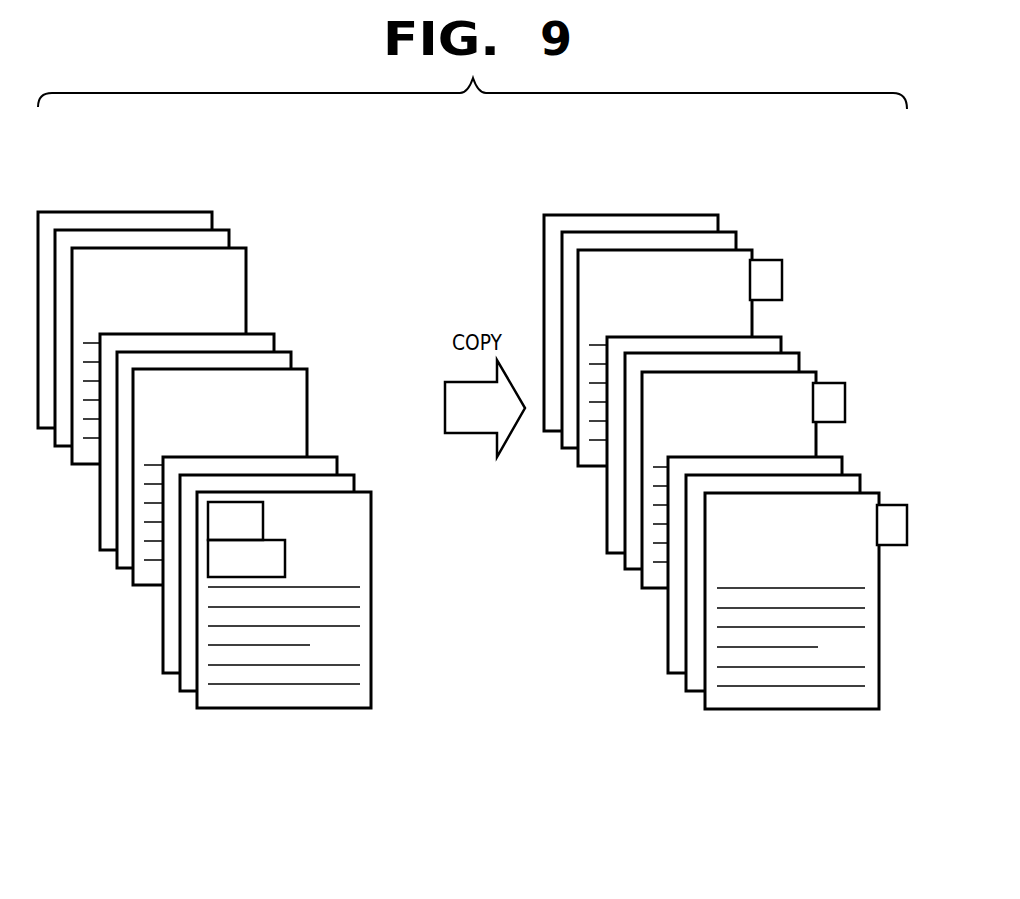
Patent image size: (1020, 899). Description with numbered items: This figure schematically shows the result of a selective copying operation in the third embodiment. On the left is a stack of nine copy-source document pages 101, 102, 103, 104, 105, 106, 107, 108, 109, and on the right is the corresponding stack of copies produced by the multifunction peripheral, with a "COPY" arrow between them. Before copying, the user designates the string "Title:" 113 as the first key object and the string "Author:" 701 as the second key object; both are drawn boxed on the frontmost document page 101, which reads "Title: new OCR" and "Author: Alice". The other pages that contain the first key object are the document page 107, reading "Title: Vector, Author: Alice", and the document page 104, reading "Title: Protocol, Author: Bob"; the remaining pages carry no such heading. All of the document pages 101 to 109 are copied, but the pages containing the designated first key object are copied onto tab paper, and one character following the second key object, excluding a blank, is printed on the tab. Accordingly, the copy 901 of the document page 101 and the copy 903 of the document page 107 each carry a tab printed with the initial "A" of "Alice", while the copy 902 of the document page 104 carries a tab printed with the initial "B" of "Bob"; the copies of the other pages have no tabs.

The document page 101 is at (262, 600).
The document page 102 is at (354, 480).
The document page 103 is at (337, 460).
The document page 104 is at (308, 400).
The document page 105 is at (292, 357).
The document page 106 is at (275, 334).
The document page 107 is at (246, 278).
The document page 108 is at (229, 232).
The document page 109 is at (211, 213).
The first key object 113 is at (208, 520).
The second key object 701 is at (208, 560).
The copy 901 is at (858, 712).
The copy 902 is at (816, 437).
The copy 903 is at (752, 315).